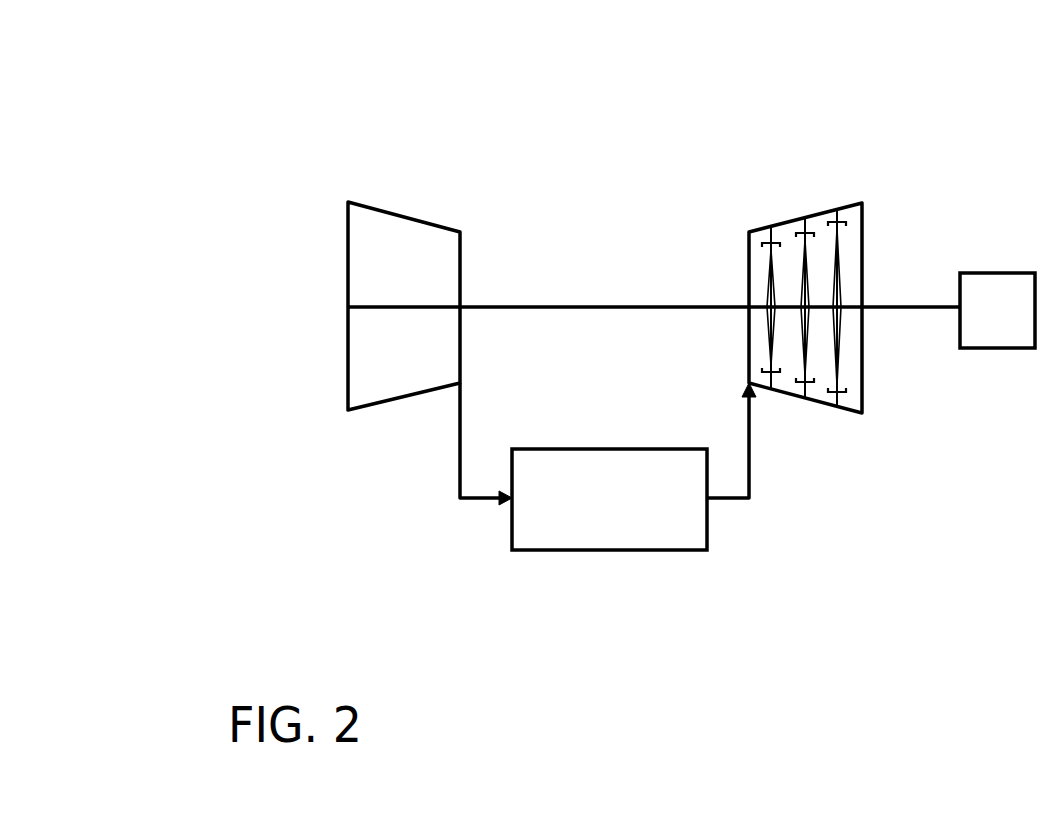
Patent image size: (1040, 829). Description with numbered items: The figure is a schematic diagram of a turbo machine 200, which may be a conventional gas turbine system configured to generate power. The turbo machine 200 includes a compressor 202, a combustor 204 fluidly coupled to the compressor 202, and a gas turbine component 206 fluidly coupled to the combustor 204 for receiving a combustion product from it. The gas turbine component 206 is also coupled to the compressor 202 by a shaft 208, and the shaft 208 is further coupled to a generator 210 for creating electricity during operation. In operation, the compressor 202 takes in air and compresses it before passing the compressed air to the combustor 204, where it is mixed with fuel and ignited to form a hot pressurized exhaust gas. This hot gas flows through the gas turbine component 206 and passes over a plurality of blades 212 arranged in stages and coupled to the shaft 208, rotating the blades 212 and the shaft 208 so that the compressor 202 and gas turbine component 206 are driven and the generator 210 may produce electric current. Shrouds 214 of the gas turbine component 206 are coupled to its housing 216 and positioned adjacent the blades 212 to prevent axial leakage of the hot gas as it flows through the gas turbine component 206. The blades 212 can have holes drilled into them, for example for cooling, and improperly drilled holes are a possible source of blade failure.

The turbo machine 200 is at (612, 104).
The compressor 202 is at (397, 250).
The combustor 204 is at (602, 525).
The gas turbine component 206 is at (788, 234).
The shaft 208 is at (545, 305).
The generator 210 is at (1004, 328).
The blades 212 is at (767, 298).
The shrouds 214 is at (768, 236).
The housing 216 is at (853, 201).